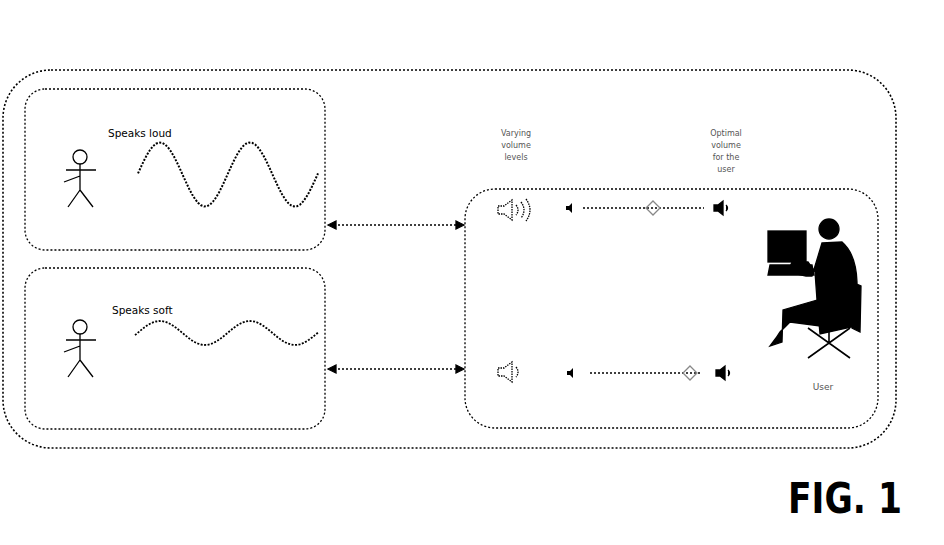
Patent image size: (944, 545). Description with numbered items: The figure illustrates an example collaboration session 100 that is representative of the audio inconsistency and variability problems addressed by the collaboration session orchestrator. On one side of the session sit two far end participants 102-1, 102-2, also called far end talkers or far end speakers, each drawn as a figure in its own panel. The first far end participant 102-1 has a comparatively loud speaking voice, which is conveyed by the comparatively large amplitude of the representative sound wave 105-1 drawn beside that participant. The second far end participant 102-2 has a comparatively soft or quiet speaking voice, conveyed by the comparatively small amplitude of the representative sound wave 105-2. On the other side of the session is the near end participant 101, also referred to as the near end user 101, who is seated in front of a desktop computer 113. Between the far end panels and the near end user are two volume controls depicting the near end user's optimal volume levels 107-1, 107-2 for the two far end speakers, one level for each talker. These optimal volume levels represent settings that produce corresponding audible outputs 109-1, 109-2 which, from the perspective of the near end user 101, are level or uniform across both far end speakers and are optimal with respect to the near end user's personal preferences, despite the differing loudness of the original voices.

The collaboration session 100 is at (124, 40).
The near end participant 101 is at (778, 306).
The first far end participant 102-1 is at (74, 152).
The second far end participant 102-2 is at (73, 321).
The representative sound wave 105-1 is at (250, 142).
The representative sound wave 105-2 is at (250, 322).
The optimal volume level 107-1 is at (615, 207).
The optimal volume level 107-2 is at (625, 372).
The audible output 109-1 is at (720, 219).
The audible output 109-2 is at (722, 384).
The desktop computer 113 is at (792, 230).